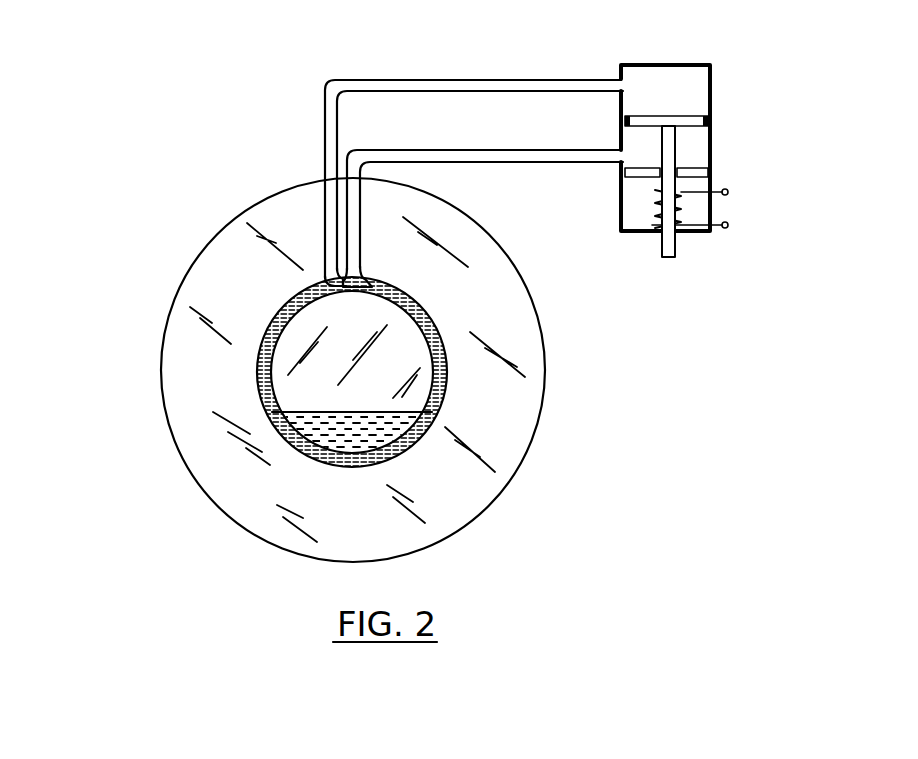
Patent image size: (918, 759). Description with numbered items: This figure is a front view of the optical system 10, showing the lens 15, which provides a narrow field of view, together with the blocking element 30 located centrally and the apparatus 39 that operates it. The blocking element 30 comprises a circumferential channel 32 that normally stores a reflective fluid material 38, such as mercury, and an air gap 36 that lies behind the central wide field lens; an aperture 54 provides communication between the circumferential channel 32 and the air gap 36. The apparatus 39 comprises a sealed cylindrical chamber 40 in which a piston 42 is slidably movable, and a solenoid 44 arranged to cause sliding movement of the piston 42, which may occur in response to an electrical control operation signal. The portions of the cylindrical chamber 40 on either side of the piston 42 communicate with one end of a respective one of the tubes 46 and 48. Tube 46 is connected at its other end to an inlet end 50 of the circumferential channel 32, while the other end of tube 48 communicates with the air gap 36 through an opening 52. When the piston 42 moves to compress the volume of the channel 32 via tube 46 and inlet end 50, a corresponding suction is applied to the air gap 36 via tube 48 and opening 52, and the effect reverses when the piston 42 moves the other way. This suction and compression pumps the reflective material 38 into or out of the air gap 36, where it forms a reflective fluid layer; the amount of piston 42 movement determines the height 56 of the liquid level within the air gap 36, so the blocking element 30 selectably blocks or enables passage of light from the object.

The optical system 10 is at (127, 231).
The lens 15 is at (169, 427).
The blocking element 30 is at (276, 442).
The circumferential channel 32 is at (262, 365).
The air gap 36 is at (410, 393).
The reflective fluid material 38 is at (268, 320).
The apparatus 39 is at (751, 65).
The sealed cylindrical chamber 40 is at (706, 64).
The piston 42 is at (676, 155).
The solenoid 44 is at (680, 219).
The tube 46 is at (497, 79).
The tube 48 is at (495, 149).
The inlet end 50 is at (323, 277).
The opening 52 is at (360, 275).
The aperture 54 is at (355, 452).
The height 56 is at (300, 405).